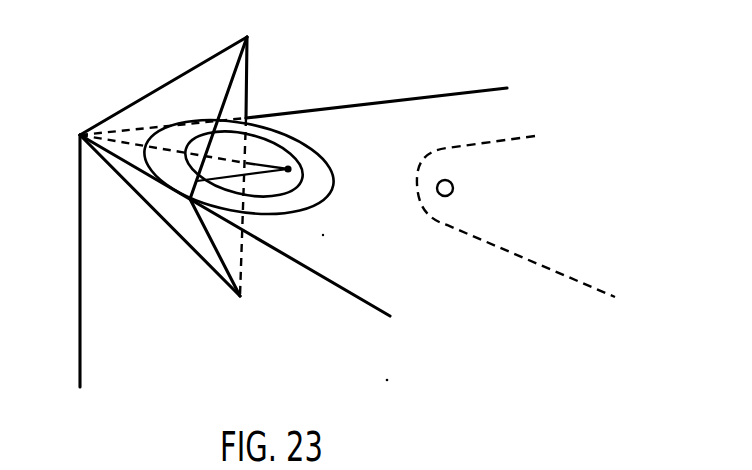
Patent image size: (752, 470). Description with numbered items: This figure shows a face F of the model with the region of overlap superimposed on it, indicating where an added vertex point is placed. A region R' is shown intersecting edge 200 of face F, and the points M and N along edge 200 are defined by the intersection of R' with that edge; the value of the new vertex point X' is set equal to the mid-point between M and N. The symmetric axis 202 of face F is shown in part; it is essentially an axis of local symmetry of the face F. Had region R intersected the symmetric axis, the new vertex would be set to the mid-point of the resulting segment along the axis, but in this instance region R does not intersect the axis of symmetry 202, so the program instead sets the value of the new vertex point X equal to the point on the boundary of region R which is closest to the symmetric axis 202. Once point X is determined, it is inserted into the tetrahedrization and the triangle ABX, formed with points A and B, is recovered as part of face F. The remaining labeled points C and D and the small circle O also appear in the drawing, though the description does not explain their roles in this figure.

The edge 200 is at (431, 96).
The symmetric axis 202 is at (485, 242).
The point A is at (221, 212).
The point B is at (207, 247).
The point C is at (222, 156).
The point D is at (164, 237).
The point M is at (160, 127).
The point N is at (224, 117).
The new vertex point X is at (266, 146).
The new vertex point X' is at (163, 83).
The region R is at (244, 205).
The region R' is at (238, 166).
The face F is at (394, 256).
The hole O is at (445, 188).